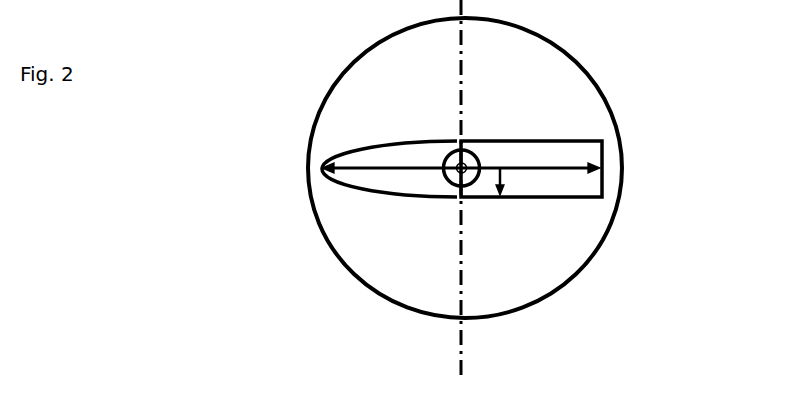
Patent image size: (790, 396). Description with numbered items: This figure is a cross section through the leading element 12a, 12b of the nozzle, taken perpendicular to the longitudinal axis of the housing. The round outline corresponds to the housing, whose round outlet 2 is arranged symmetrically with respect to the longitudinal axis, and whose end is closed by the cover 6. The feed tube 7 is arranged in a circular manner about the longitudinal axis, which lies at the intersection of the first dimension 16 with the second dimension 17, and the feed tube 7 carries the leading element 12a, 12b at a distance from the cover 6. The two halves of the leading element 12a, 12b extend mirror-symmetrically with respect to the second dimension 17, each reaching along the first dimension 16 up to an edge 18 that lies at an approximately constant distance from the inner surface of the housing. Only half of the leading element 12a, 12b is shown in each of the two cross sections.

The outlet 2 is at (477, 161).
The cover 6 is at (574, 40).
The feed tube 7 is at (483, 141).
The leading element 12a is at (364, 196).
The leading element 12b is at (587, 194).
The first dimension 16 is at (373, 155).
The second dimension 17 is at (446, 200).
The edge 18 is at (300, 165).